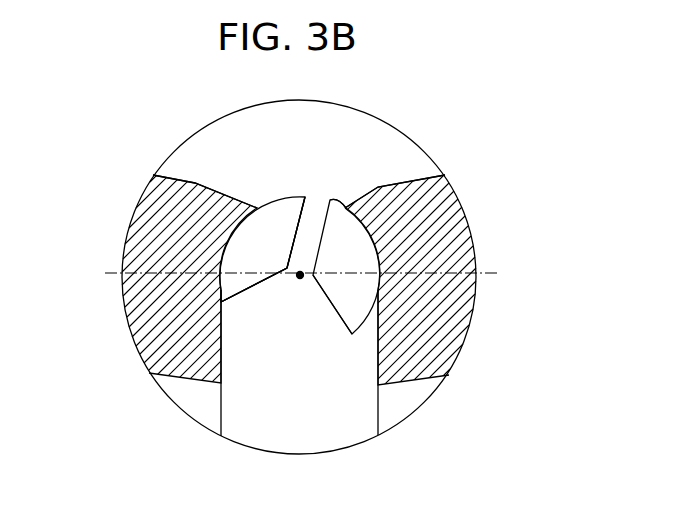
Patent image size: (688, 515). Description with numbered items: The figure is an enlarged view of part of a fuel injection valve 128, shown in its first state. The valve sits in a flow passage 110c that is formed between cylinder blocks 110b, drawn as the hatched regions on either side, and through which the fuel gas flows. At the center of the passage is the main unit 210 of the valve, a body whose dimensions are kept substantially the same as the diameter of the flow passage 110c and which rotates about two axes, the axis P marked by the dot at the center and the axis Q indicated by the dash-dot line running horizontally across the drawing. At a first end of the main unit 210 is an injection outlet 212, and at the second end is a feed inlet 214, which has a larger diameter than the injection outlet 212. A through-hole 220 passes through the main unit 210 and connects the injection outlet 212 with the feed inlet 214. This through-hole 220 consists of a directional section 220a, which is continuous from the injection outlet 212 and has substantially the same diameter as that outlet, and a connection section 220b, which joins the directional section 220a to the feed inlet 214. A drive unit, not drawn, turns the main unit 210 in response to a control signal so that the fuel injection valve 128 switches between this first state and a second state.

The cylinder blocks 110b is at (200, 335).
The flow passage 110c is at (333, 436).
The fuel injection valve 128 is at (266, 183).
The main unit 210 is at (275, 261).
The injection outlet 212 is at (330, 199).
The feed inlet 214 is at (352, 336).
The through-hole 220 is at (348, 347).
The directional section 220a is at (289, 270).
The connection section 220b is at (252, 288).
The axis P is at (307, 287).
The axis Q is at (291, 274).